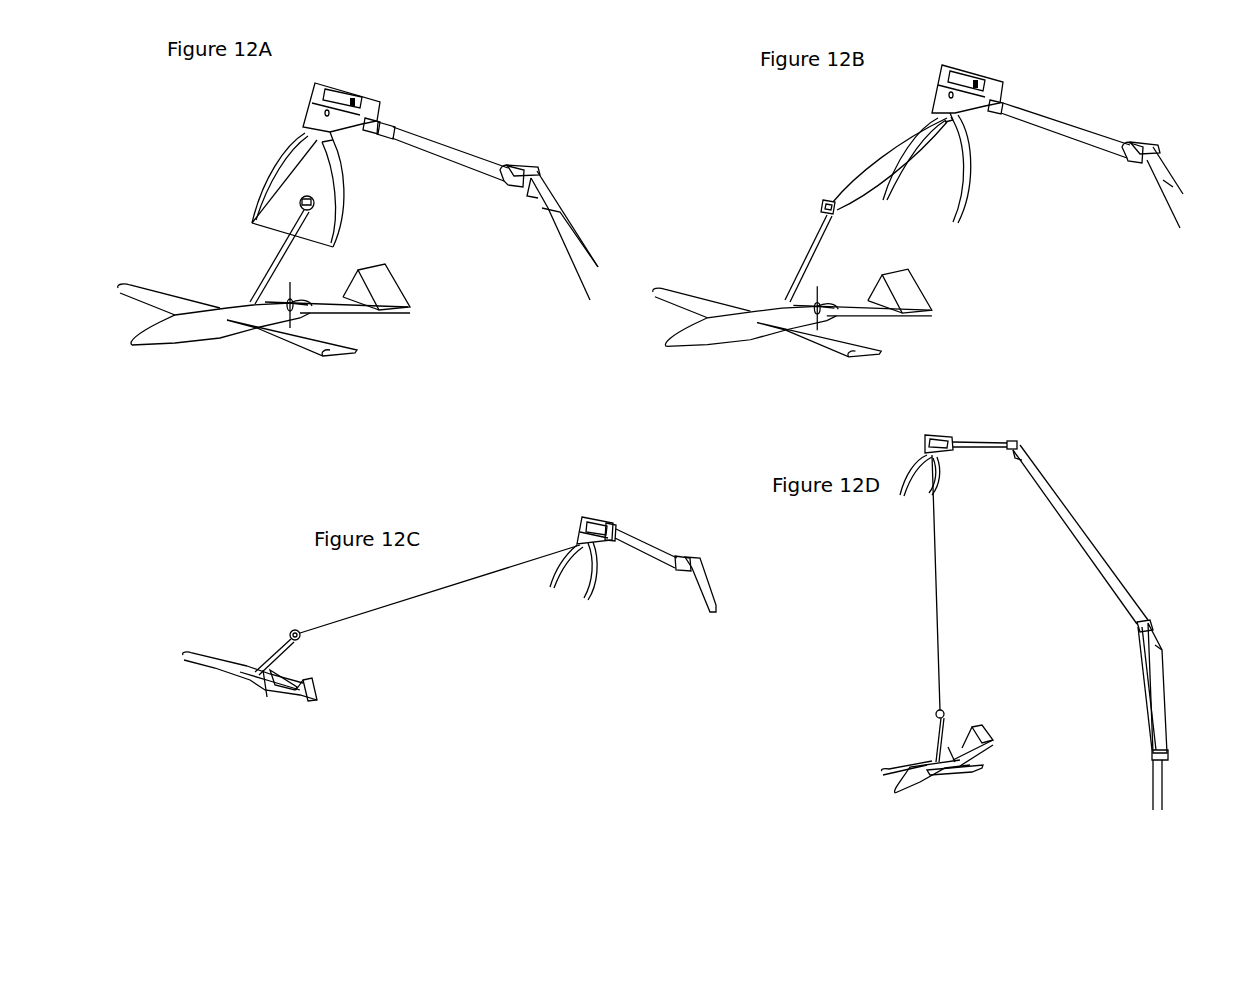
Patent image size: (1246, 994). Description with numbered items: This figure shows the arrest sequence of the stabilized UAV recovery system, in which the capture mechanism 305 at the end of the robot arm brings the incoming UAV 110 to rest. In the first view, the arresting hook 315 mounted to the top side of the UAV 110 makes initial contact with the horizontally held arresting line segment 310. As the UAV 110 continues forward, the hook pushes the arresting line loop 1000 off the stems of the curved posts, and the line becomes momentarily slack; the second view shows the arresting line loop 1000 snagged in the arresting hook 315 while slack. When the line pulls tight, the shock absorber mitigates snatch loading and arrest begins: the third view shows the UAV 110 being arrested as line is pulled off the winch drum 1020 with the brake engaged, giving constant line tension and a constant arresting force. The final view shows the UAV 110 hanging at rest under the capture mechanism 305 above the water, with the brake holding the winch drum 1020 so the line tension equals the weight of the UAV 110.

In FIG. 12A, the UAV 110 is at (205, 350).
In FIG. 12B, the UAV 110 is at (742, 350).
In FIG. 12C, the UAV 110 is at (232, 652).
In FIG. 12D, the UAV 110 is at (920, 762).
In FIG. 12D, the capture mechanism 305 is at (940, 422).
In FIG. 12A, the arresting line segment 310 is at (270, 228).
In FIG. 12B, the arresting hook 315 is at (797, 262).
In FIG. 12B, the arresting line loop 1000 is at (870, 150).
In FIG. 12C, the winch drum 1020 is at (607, 548).